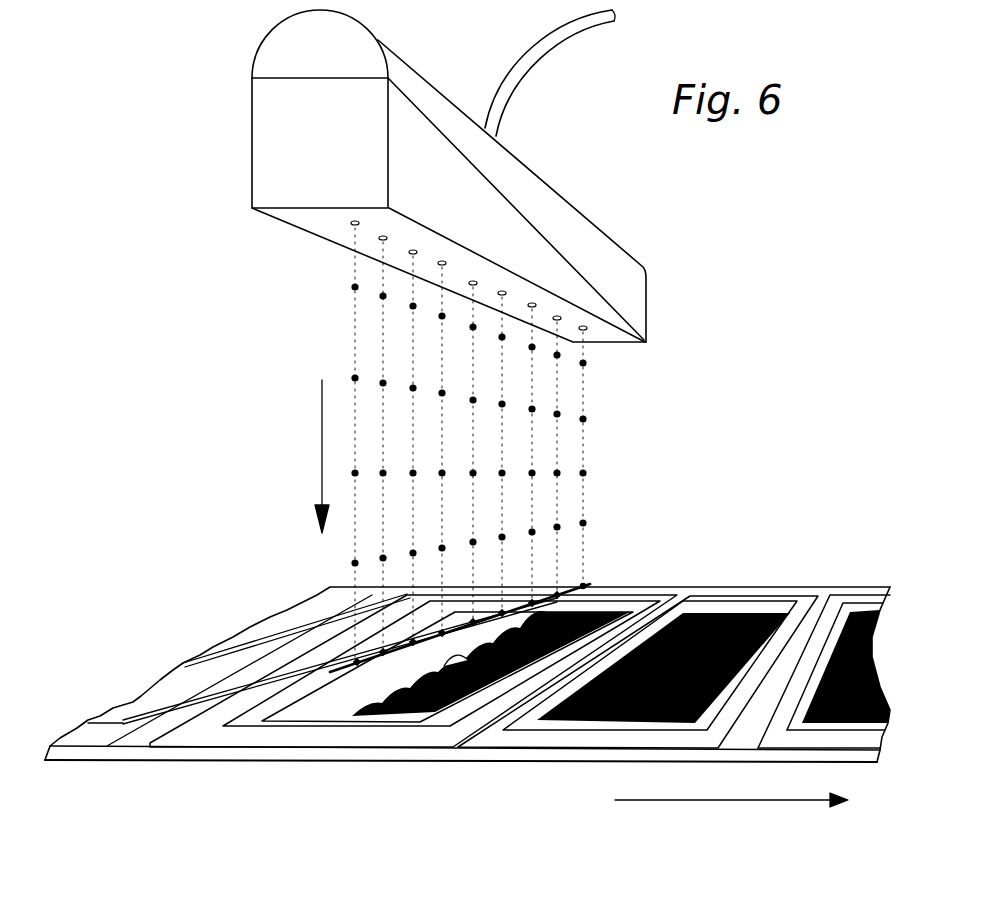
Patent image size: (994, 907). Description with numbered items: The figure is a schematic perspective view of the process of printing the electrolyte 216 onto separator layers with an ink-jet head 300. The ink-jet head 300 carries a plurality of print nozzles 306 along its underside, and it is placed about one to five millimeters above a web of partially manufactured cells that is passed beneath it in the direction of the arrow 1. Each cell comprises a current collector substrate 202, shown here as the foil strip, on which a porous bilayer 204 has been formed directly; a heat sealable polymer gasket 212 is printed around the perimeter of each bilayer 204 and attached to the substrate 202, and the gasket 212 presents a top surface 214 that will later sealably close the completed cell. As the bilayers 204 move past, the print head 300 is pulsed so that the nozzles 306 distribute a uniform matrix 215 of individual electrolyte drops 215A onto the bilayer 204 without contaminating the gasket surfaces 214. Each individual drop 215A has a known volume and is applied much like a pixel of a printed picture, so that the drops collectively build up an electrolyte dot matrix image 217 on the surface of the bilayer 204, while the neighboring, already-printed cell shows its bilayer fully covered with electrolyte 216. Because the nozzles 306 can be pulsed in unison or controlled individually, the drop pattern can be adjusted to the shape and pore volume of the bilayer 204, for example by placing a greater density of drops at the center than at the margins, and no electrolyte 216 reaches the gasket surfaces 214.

The arrow 1 is at (731, 821).
The current collector substrate 202 is at (443, 743).
The porous bilayer 204 is at (117, 712).
The gasket 212 is at (318, 744).
The gasket top surface 214 is at (401, 727).
The uniform matrix of electrolyte drops 215 is at (596, 487).
The individual electrolyte drop 215A is at (588, 418).
The electrolyte 216 is at (730, 613).
The electrolyte dot matrix image 217 is at (475, 690).
The ink-jet head 300 is at (640, 294).
The print nozzles 306 is at (354, 229).